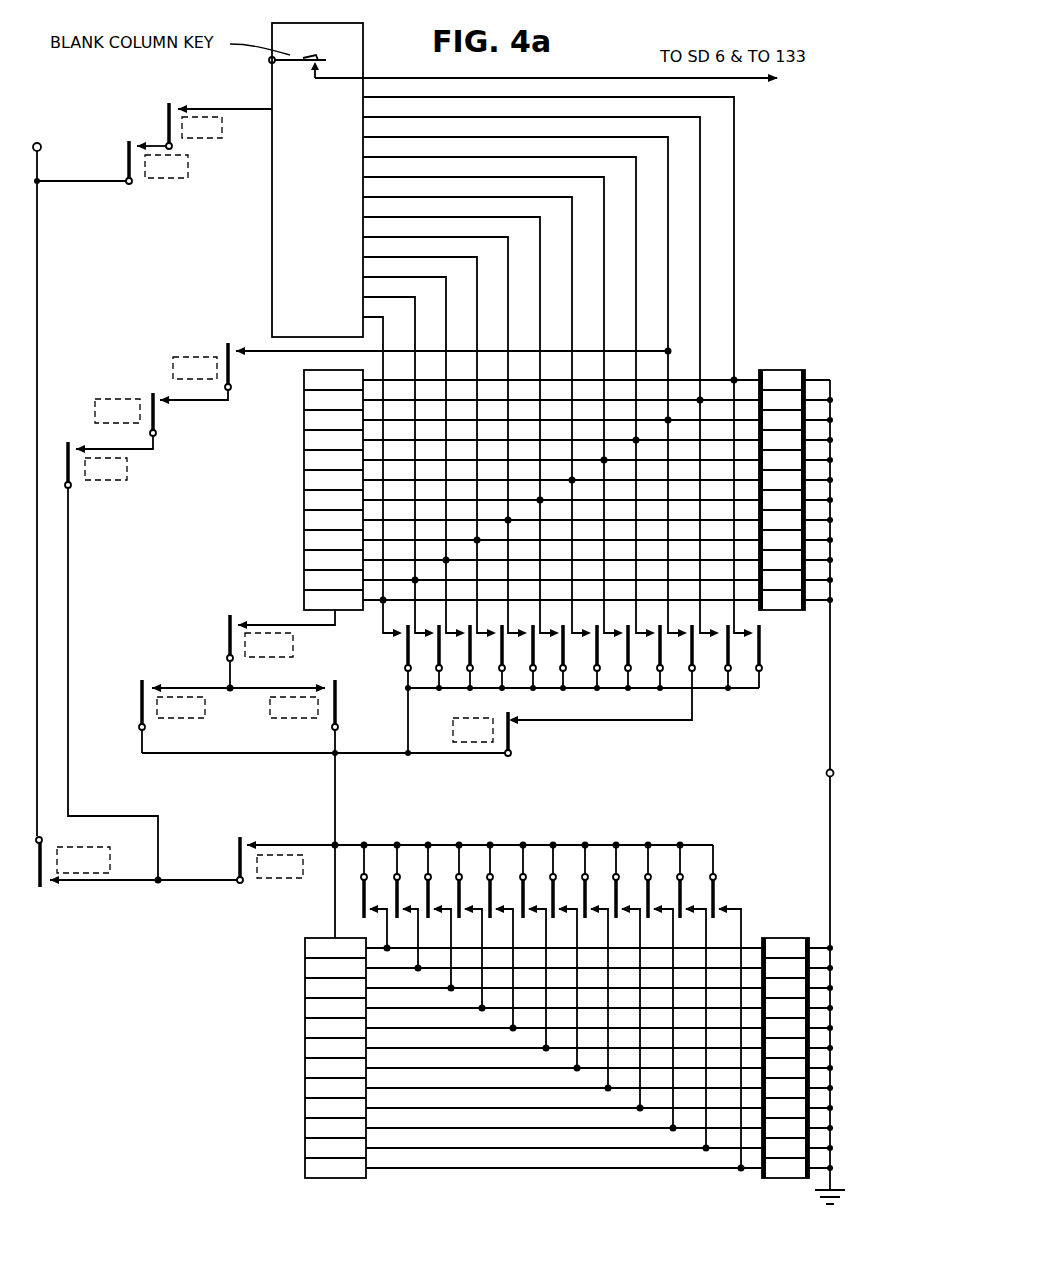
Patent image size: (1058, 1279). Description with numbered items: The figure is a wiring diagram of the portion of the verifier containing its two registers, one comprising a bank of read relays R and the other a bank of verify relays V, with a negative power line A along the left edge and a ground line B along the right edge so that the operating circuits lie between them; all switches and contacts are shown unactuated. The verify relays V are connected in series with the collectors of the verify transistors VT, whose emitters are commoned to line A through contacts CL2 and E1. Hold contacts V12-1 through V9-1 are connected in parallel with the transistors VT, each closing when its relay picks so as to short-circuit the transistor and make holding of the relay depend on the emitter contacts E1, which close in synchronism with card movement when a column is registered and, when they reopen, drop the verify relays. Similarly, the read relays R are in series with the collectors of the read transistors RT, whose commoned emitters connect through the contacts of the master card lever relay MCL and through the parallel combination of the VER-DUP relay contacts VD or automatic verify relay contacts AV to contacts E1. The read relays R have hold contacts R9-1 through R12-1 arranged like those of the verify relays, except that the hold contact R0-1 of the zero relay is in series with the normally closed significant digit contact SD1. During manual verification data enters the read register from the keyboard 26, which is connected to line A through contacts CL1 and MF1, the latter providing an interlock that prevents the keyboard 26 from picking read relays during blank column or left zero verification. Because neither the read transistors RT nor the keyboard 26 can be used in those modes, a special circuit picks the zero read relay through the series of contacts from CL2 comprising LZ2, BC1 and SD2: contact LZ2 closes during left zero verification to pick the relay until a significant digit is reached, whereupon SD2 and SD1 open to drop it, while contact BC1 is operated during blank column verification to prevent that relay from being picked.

The keyboard 26 is at (272, 247).
The negative power line A is at (41, 143).
The ground line B is at (826, 773).
The card lever relay contacts CL1 is at (142, 144).
The manual field relay contacts MF1 is at (176, 104).
The significant digit relay contact SD2 is at (236, 344).
The blank column contact BC1 is at (160, 394).
The left zero relay contact LZ2 is at (84, 446).
The master card lever relay contacts MCL is at (281, 651).
The VER-DUP relay contacts VD is at (172, 716).
The automatic verify relay contacts AV is at (304, 809).
The significant digit relay contact SD1 is at (513, 720).
The read relay hold contact R9-1 is at (405, 633).
The read relay hold contact R0-1 is at (695, 648).
The read relay hold contact R12-1 is at (748, 632).
The emitter contacts E1 is at (247, 843).
The card lever relay contacts CL2 is at (56, 885).
The verify relay hold contact V12-1 is at (360, 900).
The verify relay hold contact V9-1 is at (714, 890).
The read transistors RT is at (292, 508).
The read relays R is at (796, 362).
The verify transistors VT is at (292, 1040).
The verify relays V is at (798, 936).